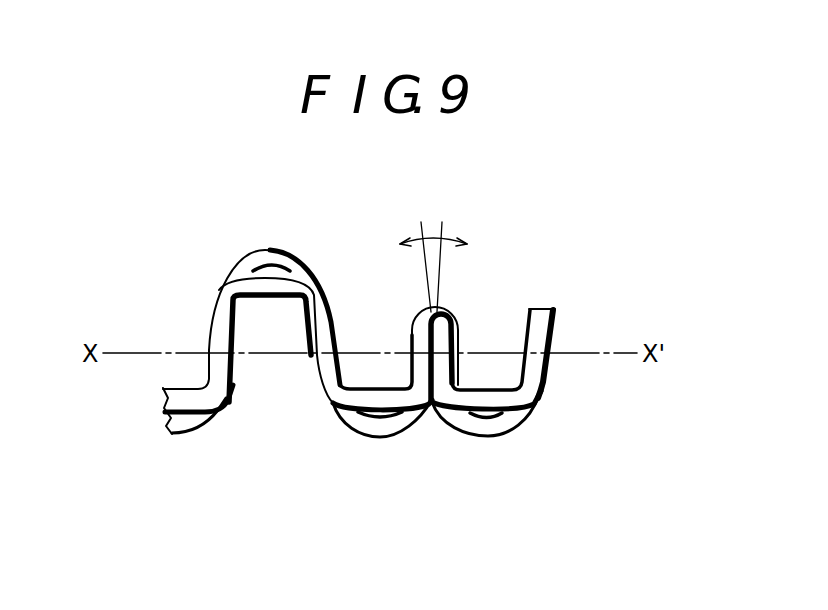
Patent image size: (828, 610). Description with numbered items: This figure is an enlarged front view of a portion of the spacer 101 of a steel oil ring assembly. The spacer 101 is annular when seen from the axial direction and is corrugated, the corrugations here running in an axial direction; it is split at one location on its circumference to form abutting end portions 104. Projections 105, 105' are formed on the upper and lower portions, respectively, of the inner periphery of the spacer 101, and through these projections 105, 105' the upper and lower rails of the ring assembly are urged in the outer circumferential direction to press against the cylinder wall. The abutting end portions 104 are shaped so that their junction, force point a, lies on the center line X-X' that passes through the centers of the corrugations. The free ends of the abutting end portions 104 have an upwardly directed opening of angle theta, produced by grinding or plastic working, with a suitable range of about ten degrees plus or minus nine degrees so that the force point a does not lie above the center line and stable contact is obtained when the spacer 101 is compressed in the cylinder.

The spacer 101 is at (543, 324).
The abutting end portions 104 is at (432, 408).
The projection 105 is at (274, 287).
The projection 105' is at (409, 463).
The force point a is at (434, 356).